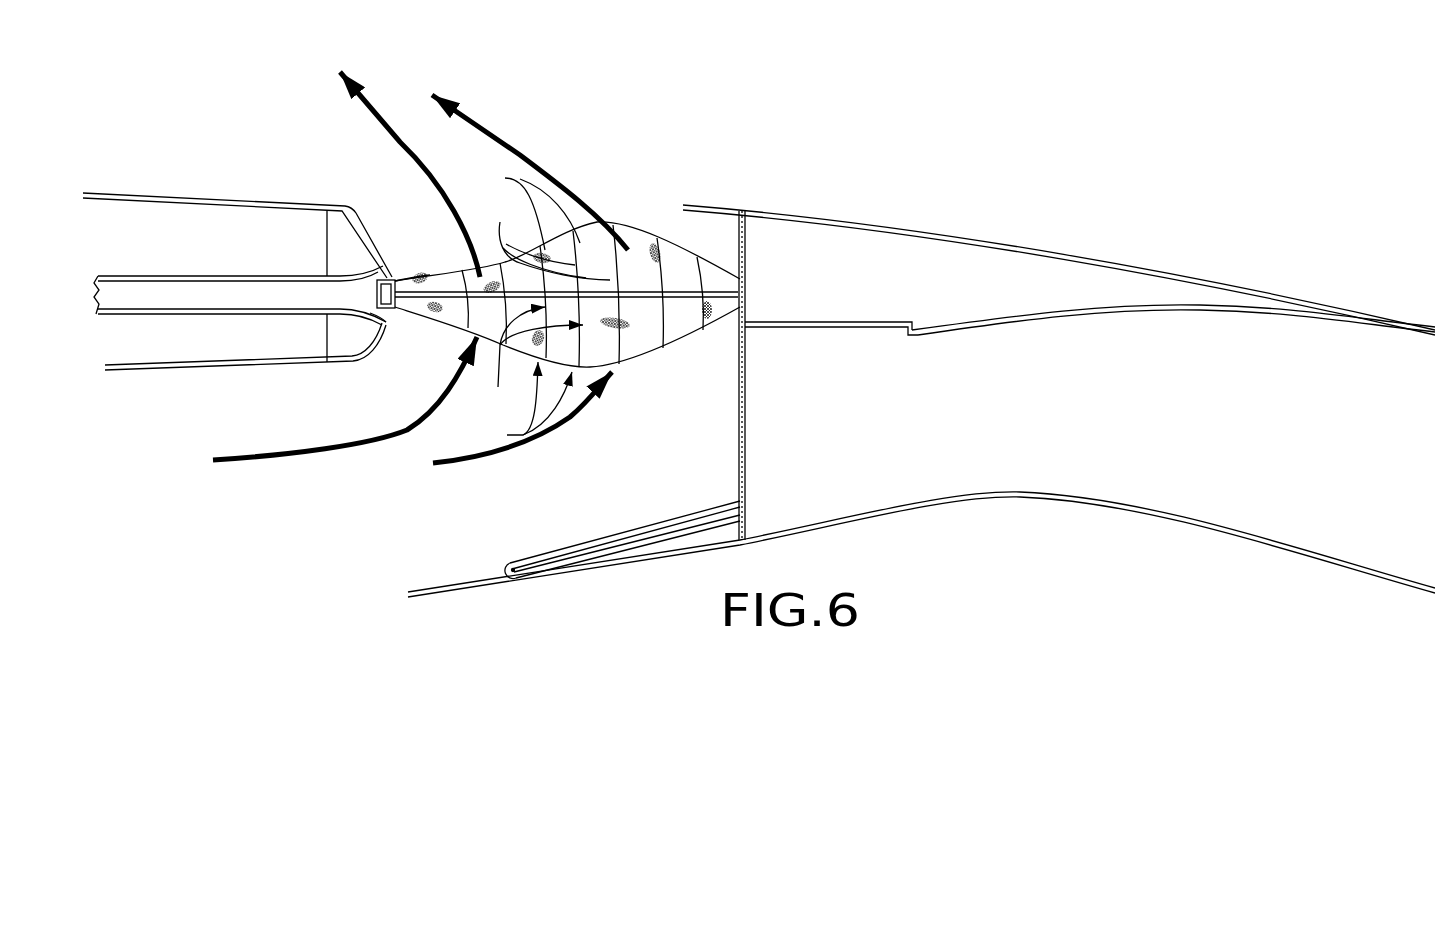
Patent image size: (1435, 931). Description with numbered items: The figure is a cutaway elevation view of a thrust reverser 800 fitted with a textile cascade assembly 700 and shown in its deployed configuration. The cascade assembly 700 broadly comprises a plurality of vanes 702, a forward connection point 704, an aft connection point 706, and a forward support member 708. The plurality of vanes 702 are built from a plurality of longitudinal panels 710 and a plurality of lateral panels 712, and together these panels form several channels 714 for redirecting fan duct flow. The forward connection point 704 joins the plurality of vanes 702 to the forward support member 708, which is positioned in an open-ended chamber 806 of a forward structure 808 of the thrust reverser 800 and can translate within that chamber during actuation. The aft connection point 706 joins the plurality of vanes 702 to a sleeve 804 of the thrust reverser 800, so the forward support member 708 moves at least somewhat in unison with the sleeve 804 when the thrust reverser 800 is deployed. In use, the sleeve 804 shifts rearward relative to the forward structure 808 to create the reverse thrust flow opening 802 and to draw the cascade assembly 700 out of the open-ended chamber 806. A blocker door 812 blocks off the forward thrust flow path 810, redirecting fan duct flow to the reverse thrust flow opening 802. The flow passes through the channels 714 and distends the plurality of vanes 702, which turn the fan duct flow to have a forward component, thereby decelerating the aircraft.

The cascade assembly 700 is at (640, 217).
The plurality of vanes 702 is at (518, 406).
The forward connection point 704 is at (397, 272).
The aft connection point 706 is at (737, 267).
The forward support member 708 is at (385, 320).
The longitudinal panels 710 is at (522, 208).
The lateral panels 712 is at (544, 235).
The channels 714 is at (530, 362).
The thrust reverser 800 is at (921, 356).
The reverse thrust flow opening 802 is at (432, 373).
The sleeve 804 is at (1153, 273).
The open-ended chamber 806 is at (235, 290).
The forward structure 808 is at (235, 188).
The forward thrust flow path 810 is at (1055, 437).
The blocker door 812 is at (755, 467).